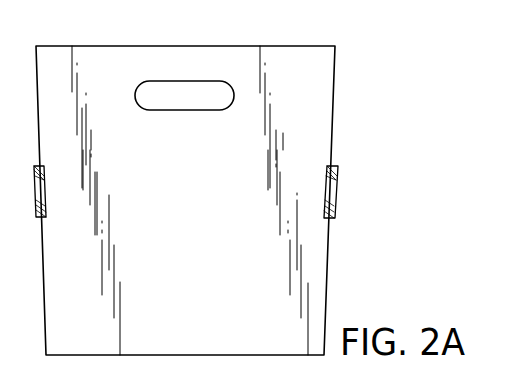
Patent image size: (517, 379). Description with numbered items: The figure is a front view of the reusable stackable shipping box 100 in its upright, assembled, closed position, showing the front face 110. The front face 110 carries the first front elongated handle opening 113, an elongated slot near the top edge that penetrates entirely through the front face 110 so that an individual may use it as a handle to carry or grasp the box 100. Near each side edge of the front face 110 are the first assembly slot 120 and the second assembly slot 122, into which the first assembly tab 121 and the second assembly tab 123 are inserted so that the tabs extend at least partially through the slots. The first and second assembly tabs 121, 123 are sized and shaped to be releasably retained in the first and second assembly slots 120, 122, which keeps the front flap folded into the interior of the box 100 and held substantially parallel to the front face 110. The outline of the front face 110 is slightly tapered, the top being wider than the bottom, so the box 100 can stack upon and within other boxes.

The box 100 is at (401, 95).
The front face 110 is at (197, 222).
The first front elongated handle opening 113 is at (192, 88).
The first assembly slot 120 is at (46, 217).
The first assembly tab 121 is at (35, 184).
The second assembly slot 122 is at (330, 166).
The second assembly tab 123 is at (337, 181).